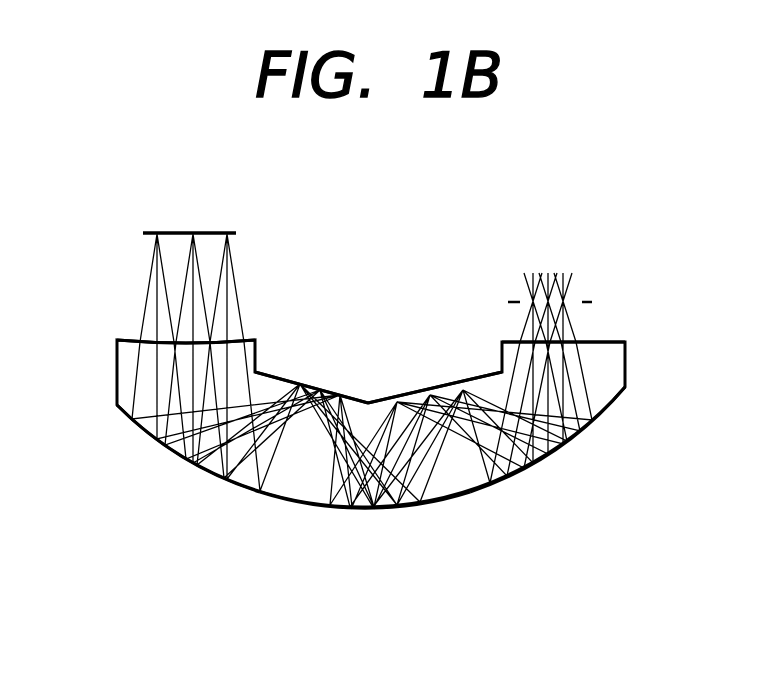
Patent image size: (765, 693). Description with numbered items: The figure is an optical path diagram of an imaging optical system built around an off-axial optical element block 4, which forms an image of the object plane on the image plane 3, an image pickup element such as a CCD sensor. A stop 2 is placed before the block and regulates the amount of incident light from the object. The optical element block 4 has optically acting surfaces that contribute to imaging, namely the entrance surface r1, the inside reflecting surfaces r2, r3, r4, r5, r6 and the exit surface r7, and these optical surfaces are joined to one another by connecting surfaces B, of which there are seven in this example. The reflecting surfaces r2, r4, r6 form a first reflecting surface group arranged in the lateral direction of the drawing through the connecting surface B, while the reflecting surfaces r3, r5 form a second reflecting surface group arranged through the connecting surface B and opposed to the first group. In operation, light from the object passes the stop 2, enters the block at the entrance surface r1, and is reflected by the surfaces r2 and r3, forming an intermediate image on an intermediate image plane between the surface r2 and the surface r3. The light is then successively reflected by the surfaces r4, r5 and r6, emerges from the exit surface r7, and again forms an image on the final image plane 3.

The stop 2 is at (585, 297).
The image plane 3 is at (215, 232).
The off-axial optical element block 4 is at (275, 483).
The entrance surface r1 is at (593, 340).
The inside reflecting surface r2 is at (562, 452).
The inside reflecting surface r3 is at (422, 388).
The inside reflecting surface r4 is at (365, 513).
The inside reflecting surface r5 is at (305, 392).
The inside reflecting surface r6 is at (168, 450).
The exit surface r7 is at (120, 340).
The connecting surface B is at (117, 378).